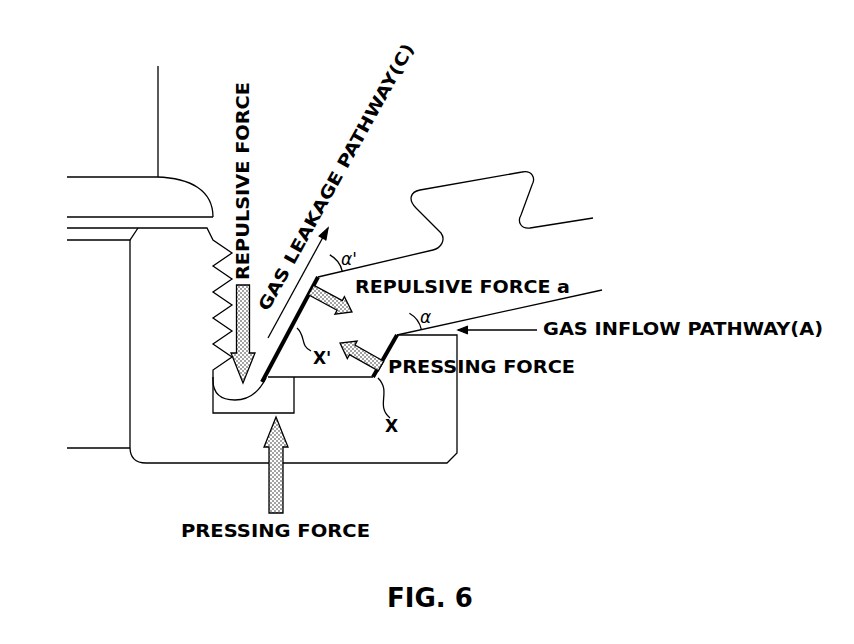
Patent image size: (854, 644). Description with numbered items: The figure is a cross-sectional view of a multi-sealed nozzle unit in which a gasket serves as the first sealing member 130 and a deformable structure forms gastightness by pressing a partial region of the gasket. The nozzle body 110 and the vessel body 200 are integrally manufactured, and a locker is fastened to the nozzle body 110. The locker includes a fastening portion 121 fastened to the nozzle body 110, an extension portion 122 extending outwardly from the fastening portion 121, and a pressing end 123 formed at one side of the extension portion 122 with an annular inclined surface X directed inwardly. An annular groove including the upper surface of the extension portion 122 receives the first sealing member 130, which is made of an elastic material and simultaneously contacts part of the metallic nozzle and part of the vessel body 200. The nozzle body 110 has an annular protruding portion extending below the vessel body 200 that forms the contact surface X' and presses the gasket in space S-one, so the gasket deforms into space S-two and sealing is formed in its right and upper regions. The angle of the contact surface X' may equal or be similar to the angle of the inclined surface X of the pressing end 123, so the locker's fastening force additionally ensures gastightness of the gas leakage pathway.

The nozzle body 110 is at (173, 123).
The fastening portion 121 is at (215, 306).
The extension portion 122 is at (380, 467).
The pressing end 123 is at (458, 408).
The first sealing member 130 is at (233, 417).
The vessel body 200 is at (507, 267).